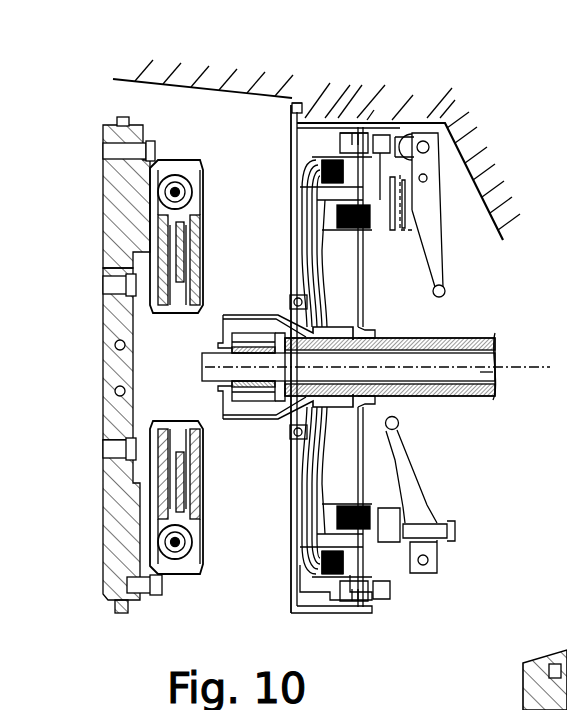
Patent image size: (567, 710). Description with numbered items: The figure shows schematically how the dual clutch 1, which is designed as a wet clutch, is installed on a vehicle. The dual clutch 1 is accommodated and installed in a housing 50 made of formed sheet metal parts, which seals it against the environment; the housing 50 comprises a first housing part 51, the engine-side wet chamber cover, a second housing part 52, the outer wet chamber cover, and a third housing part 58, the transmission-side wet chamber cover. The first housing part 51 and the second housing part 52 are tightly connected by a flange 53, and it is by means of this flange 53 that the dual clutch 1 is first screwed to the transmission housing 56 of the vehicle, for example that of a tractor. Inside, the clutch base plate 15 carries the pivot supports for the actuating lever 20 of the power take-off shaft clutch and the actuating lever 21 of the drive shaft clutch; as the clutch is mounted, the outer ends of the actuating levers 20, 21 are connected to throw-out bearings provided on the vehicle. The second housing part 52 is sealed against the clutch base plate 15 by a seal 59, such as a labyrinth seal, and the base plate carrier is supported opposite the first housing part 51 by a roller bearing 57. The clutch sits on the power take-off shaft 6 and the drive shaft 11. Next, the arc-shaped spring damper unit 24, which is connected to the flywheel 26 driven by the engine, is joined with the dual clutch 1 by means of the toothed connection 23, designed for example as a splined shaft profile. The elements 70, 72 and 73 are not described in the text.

The dual clutch 1 is at (390, 583).
The power take-off shaft 6 is at (483, 372).
The drive shaft 11 is at (465, 340).
The clutch base plate 15 is at (345, 122).
The actuating lever 20 is at (432, 233).
The actuating lever 21 is at (407, 477).
The toothed connection 23 is at (182, 318).
The arc-shaped spring damper unit 24 is at (221, 217).
The flywheel 26 is at (118, 192).
The housing 50 is at (265, 462).
The first housing part 51 is at (290, 150).
The second housing part 52 is at (318, 122).
The flange 53 is at (297, 103).
The transmission housing 56 is at (422, 110).
The roller bearing 57 is at (290, 300).
The third housing part 58 is at (385, 295).
The seal 59 is at (392, 120).
The clutch component 70 is at (523, 680).
The clutch component 72 is at (566, 645).
The clutch component 73 is at (525, 709).